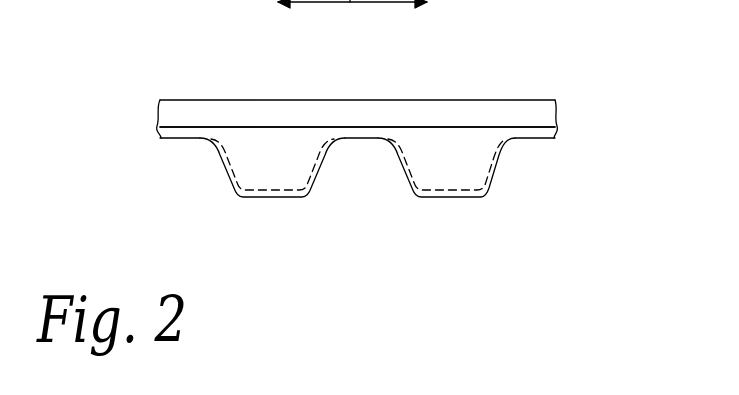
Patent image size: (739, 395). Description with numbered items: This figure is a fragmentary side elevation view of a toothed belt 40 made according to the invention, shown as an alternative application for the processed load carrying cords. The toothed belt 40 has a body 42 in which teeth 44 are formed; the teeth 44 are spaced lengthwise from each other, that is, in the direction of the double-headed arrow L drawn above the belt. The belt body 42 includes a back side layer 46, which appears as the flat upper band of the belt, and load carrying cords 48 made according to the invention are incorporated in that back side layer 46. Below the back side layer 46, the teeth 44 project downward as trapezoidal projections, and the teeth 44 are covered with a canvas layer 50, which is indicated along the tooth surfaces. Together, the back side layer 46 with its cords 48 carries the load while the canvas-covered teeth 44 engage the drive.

The toothed belt 40 is at (532, 90).
The body 42 is at (303, 197).
The teeth 44 is at (235, 198).
The back side layer 46 is at (445, 110).
The load carrying cords 48 is at (370, 130).
The canvas layer 50 is at (445, 199).